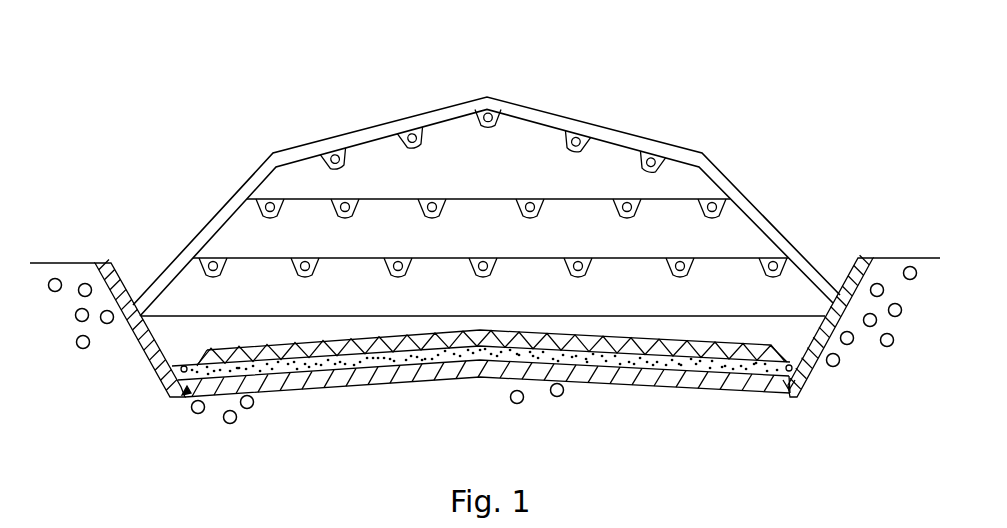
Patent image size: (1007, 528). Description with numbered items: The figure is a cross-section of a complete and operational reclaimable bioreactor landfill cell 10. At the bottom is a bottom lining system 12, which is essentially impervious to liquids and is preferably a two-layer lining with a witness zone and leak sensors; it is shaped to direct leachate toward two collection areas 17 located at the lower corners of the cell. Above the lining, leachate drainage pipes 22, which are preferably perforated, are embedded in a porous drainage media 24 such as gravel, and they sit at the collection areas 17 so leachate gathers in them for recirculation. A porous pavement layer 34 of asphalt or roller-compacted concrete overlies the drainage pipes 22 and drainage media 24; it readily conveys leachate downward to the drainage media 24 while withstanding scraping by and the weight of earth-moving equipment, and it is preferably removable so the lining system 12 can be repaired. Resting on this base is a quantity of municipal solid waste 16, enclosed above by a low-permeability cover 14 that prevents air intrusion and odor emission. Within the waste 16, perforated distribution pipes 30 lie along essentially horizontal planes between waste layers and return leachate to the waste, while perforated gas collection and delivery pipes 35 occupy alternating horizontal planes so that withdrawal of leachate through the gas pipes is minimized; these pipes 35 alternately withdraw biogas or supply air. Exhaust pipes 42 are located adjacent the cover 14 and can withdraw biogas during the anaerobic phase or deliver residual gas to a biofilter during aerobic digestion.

The reclaimable bioreactor landfill cell 10 is at (157, 141).
The bottom lining system 12 is at (705, 382).
The cover 14 is at (622, 138).
The municipal solid waste 16 is at (735, 238).
The collection areas 17 is at (186, 392).
The leachate drainage pipes 22 is at (166, 383).
The porous drainage media 24 is at (387, 358).
The perforated distribution pipes 30 is at (410, 134).
The porous pavement layer 34 is at (618, 345).
The perforated collection and delivery pipes 35 is at (273, 216).
The exhaust pipes 42 is at (332, 155).